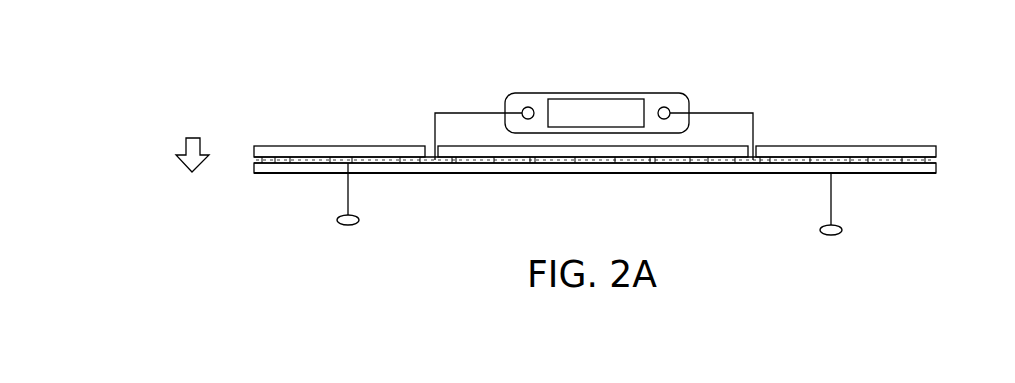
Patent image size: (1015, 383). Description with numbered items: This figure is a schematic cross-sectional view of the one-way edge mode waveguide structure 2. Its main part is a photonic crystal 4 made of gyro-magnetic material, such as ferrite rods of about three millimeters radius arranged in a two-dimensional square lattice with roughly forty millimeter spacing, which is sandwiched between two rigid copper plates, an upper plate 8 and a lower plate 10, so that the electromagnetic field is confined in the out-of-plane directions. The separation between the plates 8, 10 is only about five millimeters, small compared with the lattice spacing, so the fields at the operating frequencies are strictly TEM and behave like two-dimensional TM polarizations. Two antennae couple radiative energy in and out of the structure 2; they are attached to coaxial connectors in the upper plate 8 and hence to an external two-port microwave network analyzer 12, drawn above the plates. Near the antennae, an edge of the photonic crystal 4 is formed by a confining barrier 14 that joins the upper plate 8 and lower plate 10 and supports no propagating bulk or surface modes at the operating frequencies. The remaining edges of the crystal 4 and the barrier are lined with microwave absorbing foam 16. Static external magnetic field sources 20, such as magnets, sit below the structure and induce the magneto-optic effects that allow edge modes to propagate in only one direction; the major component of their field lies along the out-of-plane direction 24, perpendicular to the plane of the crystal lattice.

The one-way edge mode waveguide structure 2 is at (286, 59).
The photonic crystal 4 is at (883, 165).
The upper copper plate 8 is at (832, 146).
The lower copper plate 10 is at (757, 173).
The two-port microwave network analyzer 12 is at (596, 92).
The confining barrier 14 is at (943, 146).
The microwave absorbing foam 16 is at (254, 158).
The static external magnetic field source 20 is at (348, 226).
The out-of-plane direction 24 is at (193, 138).